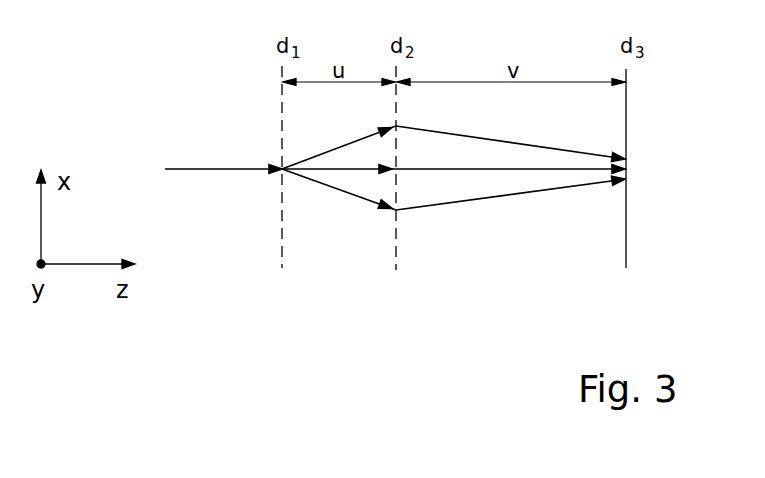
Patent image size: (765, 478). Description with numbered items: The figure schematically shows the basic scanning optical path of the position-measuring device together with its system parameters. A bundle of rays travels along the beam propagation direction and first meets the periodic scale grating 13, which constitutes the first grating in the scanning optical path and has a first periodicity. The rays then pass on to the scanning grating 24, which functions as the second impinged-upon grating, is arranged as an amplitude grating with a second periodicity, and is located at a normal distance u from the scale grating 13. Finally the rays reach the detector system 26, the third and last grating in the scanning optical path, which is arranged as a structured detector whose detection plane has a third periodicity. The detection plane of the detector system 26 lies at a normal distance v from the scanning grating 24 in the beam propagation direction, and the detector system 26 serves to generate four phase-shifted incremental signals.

The scale grating 13 is at (268, 255).
The scanning grating 24 is at (381, 255).
The detector system 26 is at (609, 260).